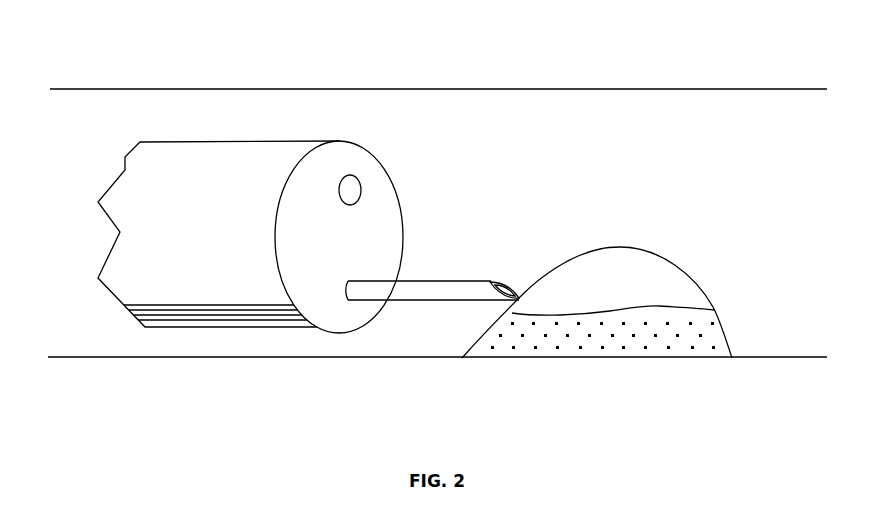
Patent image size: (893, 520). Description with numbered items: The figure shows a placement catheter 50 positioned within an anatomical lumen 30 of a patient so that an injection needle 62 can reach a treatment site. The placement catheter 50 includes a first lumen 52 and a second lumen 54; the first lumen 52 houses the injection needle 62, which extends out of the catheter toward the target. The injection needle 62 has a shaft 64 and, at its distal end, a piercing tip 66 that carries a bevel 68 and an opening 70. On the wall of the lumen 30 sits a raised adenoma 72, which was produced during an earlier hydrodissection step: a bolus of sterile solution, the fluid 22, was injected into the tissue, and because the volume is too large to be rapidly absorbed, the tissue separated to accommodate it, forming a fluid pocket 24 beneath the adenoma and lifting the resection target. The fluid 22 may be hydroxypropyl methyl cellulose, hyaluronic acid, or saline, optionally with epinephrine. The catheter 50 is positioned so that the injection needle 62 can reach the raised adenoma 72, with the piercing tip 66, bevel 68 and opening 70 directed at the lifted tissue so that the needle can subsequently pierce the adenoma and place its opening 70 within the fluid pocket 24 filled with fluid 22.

The body lumen wall 30 is at (522, 89).
The placement catheter 50 is at (228, 142).
The second lumen 54 is at (358, 177).
The first lumen 52 is at (352, 278).
The injection needle 62 is at (437, 279).
The shaft 64 is at (433, 302).
The opening 70 is at (493, 281).
The piercing tip 66 is at (515, 288).
The bevel 68 is at (522, 293).
The raised adenoma 72 is at (707, 290).
The fluid pocket 24 is at (685, 322).
The fluid 22 is at (573, 348).